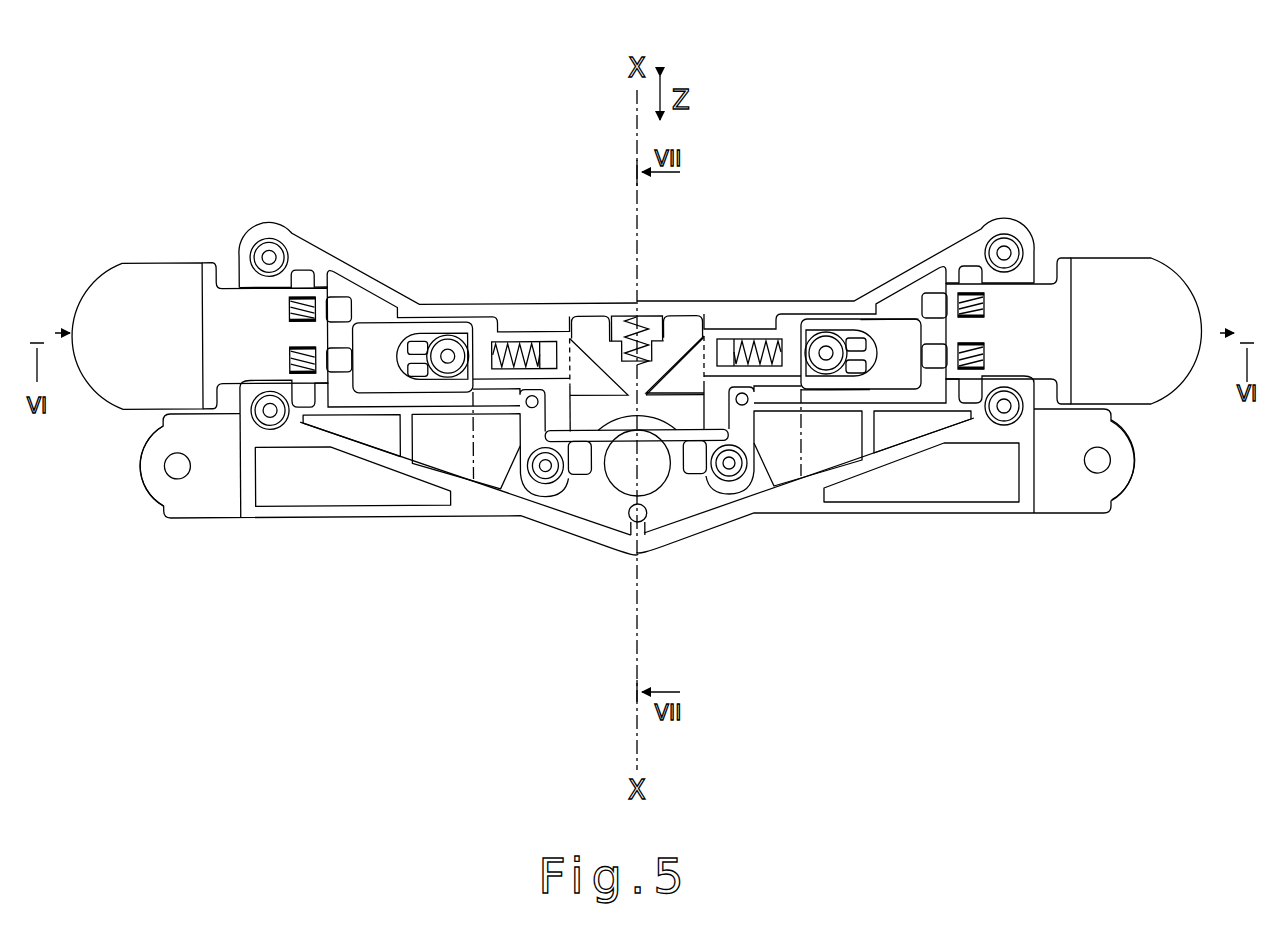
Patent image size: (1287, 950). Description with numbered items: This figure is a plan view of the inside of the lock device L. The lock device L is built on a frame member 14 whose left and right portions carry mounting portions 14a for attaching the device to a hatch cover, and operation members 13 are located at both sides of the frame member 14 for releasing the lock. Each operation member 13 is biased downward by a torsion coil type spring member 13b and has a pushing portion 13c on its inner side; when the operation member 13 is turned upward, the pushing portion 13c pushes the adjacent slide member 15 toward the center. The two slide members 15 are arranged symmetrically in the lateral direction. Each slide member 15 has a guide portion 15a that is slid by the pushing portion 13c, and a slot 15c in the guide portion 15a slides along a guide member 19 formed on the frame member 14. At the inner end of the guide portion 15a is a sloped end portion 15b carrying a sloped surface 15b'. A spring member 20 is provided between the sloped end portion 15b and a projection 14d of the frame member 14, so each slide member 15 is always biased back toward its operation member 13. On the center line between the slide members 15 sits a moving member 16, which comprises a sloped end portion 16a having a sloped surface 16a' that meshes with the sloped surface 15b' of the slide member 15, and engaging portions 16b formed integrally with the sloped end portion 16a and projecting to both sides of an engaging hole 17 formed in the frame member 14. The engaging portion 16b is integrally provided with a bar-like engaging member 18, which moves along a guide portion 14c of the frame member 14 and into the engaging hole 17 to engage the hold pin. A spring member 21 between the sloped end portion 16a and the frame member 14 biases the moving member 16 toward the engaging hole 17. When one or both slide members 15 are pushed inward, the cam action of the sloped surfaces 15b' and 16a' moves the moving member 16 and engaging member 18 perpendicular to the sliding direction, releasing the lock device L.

The lock device L is at (905, 116).
The operation member 13 is at (140, 278).
The spring member 13b is at (302, 297).
The pushing portion 13c is at (338, 365).
The frame member 14 is at (253, 526).
The mounting portion 14a is at (153, 480).
The guide portion 14c is at (553, 420).
The projection 14d is at (527, 345).
The slide member 15 is at (373, 376).
The guide portion 15a is at (897, 372).
The sloped end portion 15b is at (822, 495).
The sloped surface 15b' is at (676, 313).
The slot 15c is at (853, 416).
The moving member 16 is at (595, 332).
The sloped end portion 16a is at (622, 278).
The sloped surface 16a' is at (694, 478).
The engaging portion 16b is at (580, 463).
The engaging hole 17 is at (623, 475).
The engaging member 18 is at (645, 444).
The guide member 19 is at (463, 337).
The spring member 20 is at (478, 338).
The spring member 21 is at (624, 318).